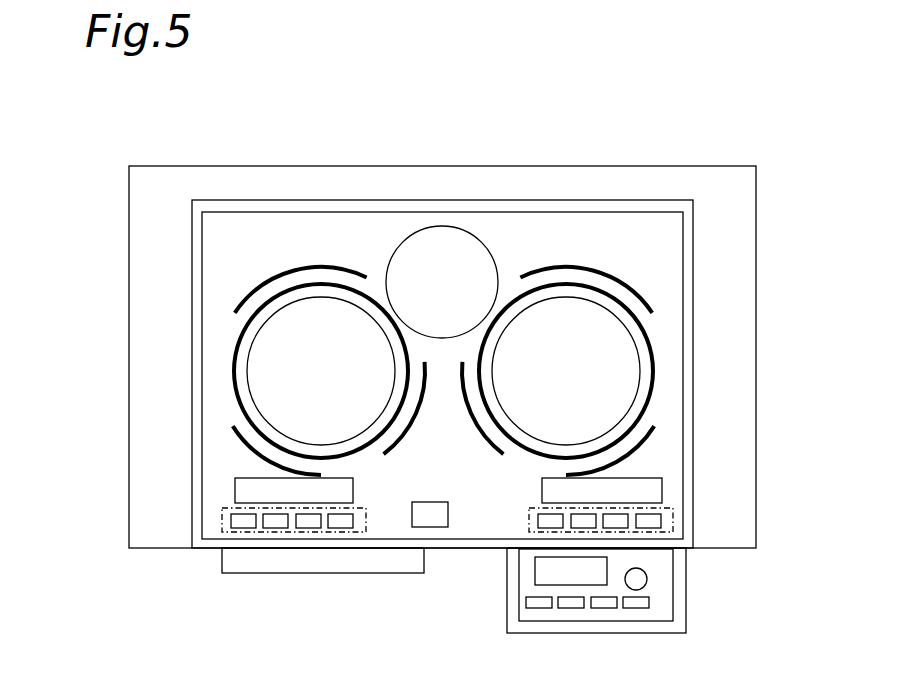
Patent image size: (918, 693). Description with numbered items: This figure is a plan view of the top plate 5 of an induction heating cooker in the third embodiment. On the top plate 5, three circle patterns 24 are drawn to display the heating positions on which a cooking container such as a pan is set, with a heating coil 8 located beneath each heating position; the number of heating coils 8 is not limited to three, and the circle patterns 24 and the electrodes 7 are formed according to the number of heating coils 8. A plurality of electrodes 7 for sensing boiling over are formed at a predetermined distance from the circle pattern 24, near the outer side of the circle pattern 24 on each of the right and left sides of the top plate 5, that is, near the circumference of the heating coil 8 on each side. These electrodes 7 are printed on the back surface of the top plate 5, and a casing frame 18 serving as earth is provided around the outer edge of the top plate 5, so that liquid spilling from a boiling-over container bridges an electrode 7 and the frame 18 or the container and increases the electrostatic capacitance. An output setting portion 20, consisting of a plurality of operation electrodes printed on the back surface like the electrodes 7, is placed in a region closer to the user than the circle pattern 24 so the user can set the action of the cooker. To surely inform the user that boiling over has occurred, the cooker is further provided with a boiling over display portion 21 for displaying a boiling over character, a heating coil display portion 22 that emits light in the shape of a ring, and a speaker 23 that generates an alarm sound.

The top plate 5 is at (608, 250).
The electrode 7 is at (252, 293).
The heating coil 8 is at (442, 247).
The casing frame 18 is at (191, 283).
The output setting portion 20 is at (223, 517).
The boiling over display portion 21 is at (437, 517).
The heating coil display portion 22 is at (309, 285).
The speaker 23 is at (647, 579).
The circle pattern 24 is at (325, 297).